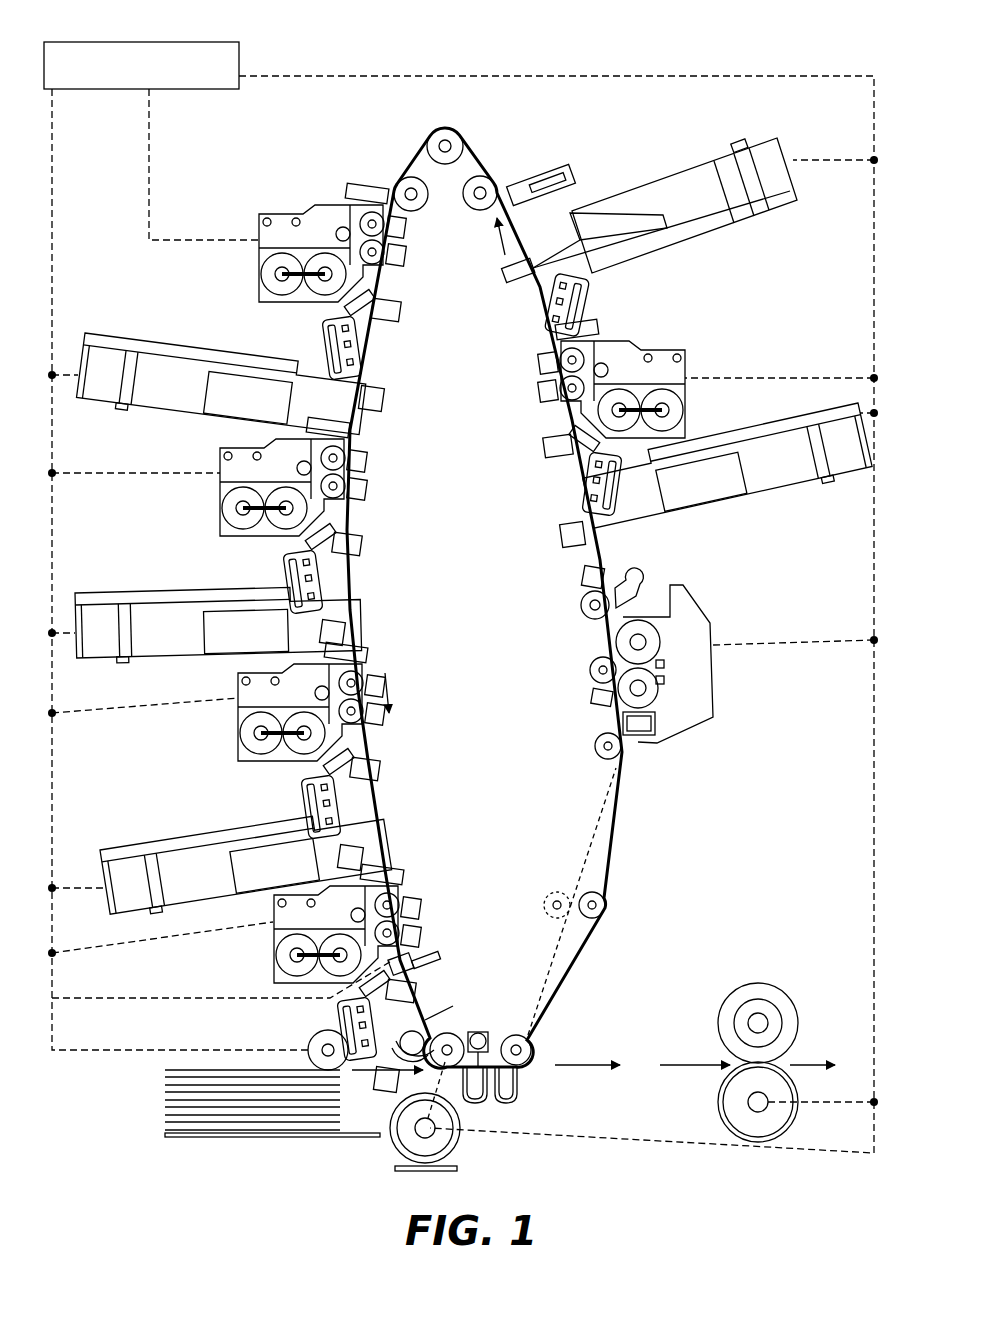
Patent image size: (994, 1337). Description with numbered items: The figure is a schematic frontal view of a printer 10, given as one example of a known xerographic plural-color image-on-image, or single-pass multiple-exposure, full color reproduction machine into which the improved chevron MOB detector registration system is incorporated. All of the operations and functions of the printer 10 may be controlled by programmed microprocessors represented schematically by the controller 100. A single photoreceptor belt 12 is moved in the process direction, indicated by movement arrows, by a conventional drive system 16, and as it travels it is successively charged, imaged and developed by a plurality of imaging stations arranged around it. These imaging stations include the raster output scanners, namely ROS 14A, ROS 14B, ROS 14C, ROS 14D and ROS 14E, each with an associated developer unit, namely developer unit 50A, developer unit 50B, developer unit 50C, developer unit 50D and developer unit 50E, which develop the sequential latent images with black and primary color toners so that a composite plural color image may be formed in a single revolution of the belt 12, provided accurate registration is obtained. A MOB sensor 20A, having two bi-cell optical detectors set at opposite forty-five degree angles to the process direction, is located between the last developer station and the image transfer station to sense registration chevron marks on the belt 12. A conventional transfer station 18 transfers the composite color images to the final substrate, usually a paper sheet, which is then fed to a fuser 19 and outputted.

The printer 10 is at (566, 72).
The photoreceptor belt 12 is at (580, 960).
The ROS 14A is at (132, 850).
The ROS 14B is at (130, 595).
The ROS 14C is at (140, 343).
The ROS 14D is at (655, 187).
The ROS 14E is at (735, 433).
The drive system 16 is at (407, 1147).
The transfer station 18 is at (505, 1112).
The fuser 19 is at (812, 1037).
The MOB sensor 20A is at (403, 960).
The developer unit 50A is at (315, 983).
The developer unit 50B is at (263, 761).
The developer unit 50C is at (260, 536).
The developer unit 50D is at (282, 302).
The developer unit 50E is at (685, 350).
The controller 100 is at (237, 57).